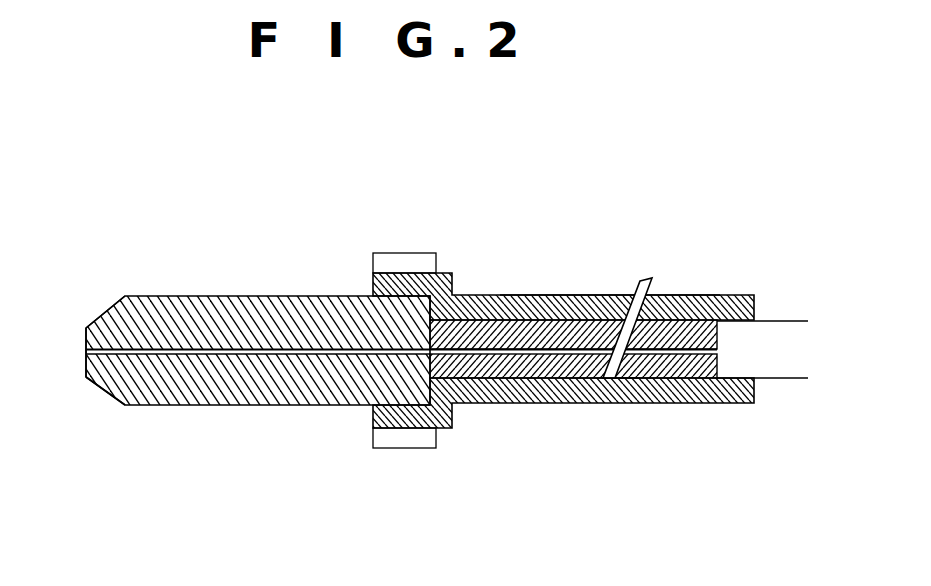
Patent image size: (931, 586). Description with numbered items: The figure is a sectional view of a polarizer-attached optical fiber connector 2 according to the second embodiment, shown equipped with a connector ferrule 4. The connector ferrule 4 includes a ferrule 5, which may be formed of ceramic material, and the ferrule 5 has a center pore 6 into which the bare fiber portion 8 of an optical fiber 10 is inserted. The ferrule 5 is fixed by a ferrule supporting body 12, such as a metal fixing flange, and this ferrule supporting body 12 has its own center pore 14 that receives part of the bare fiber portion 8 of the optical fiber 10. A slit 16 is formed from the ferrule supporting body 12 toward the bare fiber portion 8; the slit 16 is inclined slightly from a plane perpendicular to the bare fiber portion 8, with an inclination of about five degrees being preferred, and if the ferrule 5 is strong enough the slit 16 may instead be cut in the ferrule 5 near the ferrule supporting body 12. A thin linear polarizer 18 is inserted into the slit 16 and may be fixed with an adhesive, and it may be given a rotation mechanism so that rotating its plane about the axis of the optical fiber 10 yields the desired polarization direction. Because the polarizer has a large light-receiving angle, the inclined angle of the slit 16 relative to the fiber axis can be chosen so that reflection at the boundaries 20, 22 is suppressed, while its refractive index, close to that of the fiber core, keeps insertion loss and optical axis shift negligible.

The polarizer-attached optical fiber connector 2 is at (106, 305).
The connector ferrule 4 is at (98, 390).
The ferrule 5 is at (215, 307).
The center pore 6 is at (89, 358).
The bare fiber portion 8 is at (305, 352).
The optical fiber 10 is at (783, 378).
The ferrule supporting body 12 is at (482, 295).
The center pore 14 is at (505, 356).
The slit 16 is at (598, 295).
The linear polarizer 18 is at (653, 279).
The boundary 20 is at (600, 378).
The boundary 22 is at (618, 370).